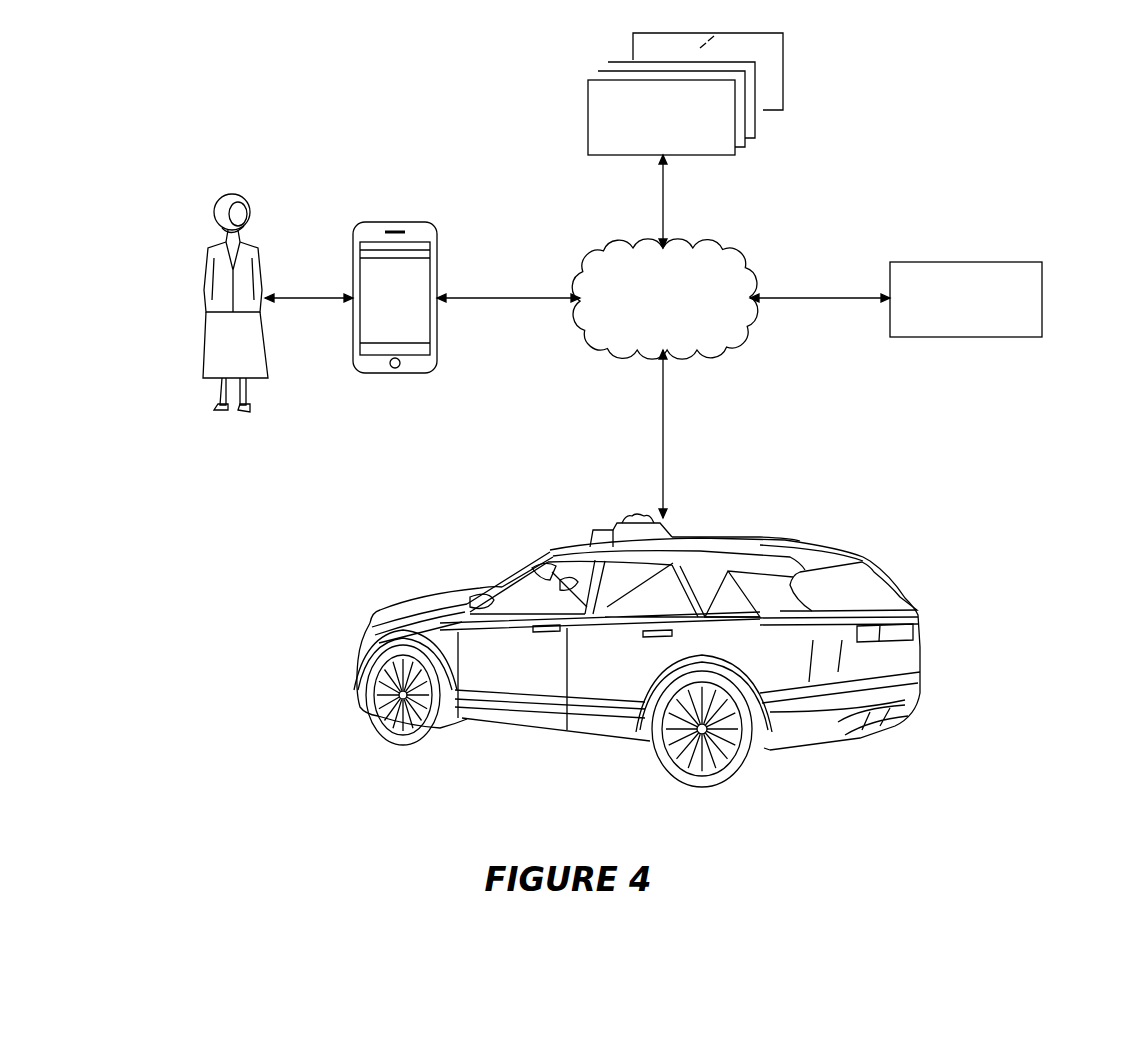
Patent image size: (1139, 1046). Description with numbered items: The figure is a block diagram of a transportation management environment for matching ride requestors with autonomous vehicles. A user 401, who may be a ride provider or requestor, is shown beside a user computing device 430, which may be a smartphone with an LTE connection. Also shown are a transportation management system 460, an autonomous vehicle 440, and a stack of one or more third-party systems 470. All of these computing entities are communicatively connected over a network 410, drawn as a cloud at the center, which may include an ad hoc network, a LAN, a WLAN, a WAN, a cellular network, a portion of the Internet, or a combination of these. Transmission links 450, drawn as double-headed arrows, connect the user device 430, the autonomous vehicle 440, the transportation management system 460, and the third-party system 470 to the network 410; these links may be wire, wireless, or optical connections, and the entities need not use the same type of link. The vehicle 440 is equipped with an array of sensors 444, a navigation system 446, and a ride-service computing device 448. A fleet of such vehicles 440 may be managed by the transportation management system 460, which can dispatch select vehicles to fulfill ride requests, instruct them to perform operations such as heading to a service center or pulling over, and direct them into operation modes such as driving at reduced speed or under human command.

The user 401 is at (230, 193).
The user computing device 430 is at (398, 222).
The transmission links 450 is at (312, 290).
The third-party system 470 is at (583, 120).
The network 410 is at (664, 299).
The transportation management system 460 is at (1045, 297).
The autonomous vehicle 440 is at (355, 665).
The array of sensors 444 is at (627, 517).
The navigation system 446 is at (672, 533).
The ride-service computing device 448 is at (537, 567).